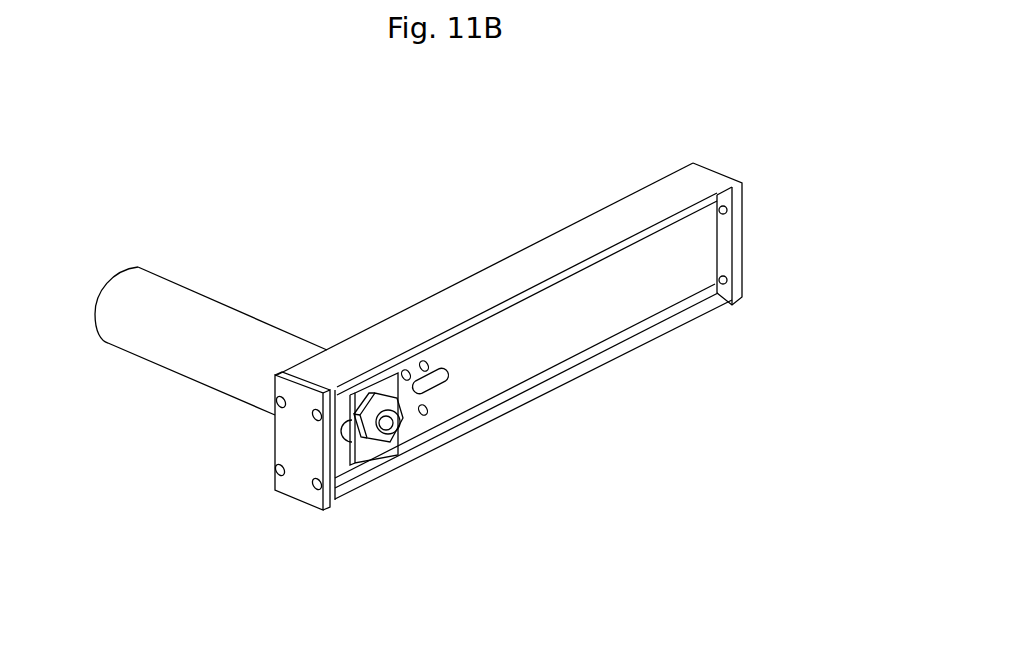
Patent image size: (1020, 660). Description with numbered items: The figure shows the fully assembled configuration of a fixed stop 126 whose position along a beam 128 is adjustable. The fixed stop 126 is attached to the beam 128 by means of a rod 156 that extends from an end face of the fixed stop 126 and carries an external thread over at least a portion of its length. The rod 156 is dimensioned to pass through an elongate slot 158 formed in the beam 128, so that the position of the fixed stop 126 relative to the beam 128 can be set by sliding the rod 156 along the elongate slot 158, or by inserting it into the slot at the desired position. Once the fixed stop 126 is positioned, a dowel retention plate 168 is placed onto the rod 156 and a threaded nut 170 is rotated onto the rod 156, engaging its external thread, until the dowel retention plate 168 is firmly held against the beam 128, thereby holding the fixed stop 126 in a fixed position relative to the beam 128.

The fixed stop 126 is at (220, 332).
The beam 128 is at (576, 317).
The rod 156 is at (392, 425).
The elongate slot 158 is at (418, 392).
The dowel retention plate 168 is at (357, 450).
The threaded nut 170 is at (375, 447).